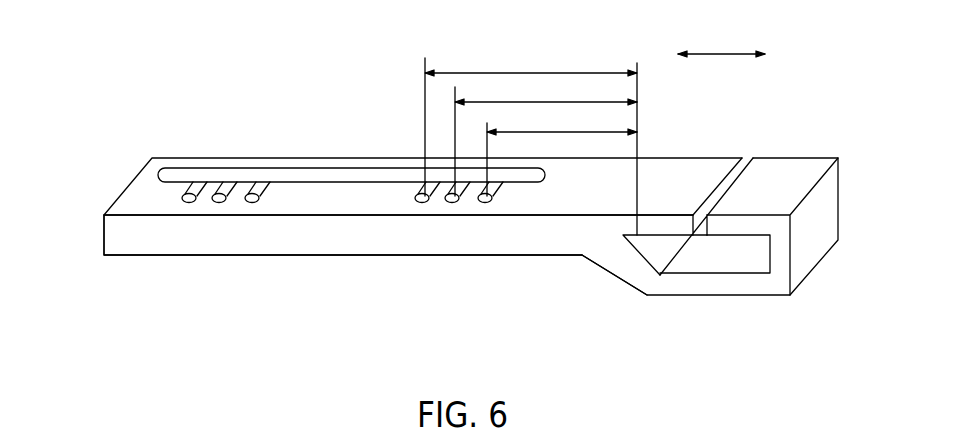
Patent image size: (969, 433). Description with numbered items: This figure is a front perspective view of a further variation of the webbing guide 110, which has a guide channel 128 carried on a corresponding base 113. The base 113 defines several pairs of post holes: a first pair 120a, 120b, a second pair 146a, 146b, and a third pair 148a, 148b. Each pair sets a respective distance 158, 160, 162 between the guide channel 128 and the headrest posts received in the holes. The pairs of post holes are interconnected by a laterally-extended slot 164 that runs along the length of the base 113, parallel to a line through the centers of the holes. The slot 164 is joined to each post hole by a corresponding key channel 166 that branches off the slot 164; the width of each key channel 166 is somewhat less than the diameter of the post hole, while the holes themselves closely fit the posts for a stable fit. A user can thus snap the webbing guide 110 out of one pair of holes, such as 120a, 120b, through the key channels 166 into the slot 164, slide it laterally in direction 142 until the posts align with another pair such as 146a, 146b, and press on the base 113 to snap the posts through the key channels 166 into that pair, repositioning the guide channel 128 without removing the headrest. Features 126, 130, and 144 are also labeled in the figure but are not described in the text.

The webbing guide 110 is at (807, 103).
The base 113 is at (310, 237).
The first pair post hole 120a is at (493, 198).
The first pair post hole 120b is at (248, 200).
The chamfered surface 126 is at (615, 290).
The guide channel 128 is at (742, 258).
The V-shaped groove 130 is at (700, 248).
The direction 142 is at (725, 53).
The slit 144 is at (732, 157).
The second pair post hole 146a is at (458, 198).
The second pair post hole 146b is at (217, 200).
The third pair post hole 148a is at (423, 198).
The third pair post hole 148b is at (183, 200).
The distance 158 is at (565, 130).
The distance 160 is at (543, 100).
The distance 162 is at (498, 72).
The slot 164 is at (315, 177).
The key channel 166 is at (552, 272).